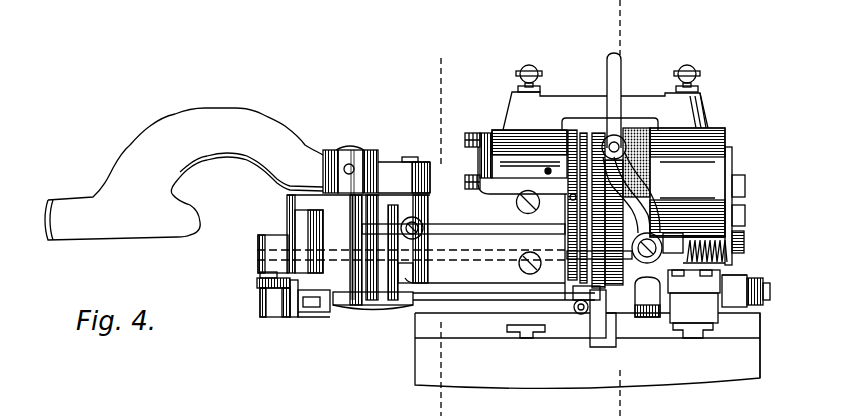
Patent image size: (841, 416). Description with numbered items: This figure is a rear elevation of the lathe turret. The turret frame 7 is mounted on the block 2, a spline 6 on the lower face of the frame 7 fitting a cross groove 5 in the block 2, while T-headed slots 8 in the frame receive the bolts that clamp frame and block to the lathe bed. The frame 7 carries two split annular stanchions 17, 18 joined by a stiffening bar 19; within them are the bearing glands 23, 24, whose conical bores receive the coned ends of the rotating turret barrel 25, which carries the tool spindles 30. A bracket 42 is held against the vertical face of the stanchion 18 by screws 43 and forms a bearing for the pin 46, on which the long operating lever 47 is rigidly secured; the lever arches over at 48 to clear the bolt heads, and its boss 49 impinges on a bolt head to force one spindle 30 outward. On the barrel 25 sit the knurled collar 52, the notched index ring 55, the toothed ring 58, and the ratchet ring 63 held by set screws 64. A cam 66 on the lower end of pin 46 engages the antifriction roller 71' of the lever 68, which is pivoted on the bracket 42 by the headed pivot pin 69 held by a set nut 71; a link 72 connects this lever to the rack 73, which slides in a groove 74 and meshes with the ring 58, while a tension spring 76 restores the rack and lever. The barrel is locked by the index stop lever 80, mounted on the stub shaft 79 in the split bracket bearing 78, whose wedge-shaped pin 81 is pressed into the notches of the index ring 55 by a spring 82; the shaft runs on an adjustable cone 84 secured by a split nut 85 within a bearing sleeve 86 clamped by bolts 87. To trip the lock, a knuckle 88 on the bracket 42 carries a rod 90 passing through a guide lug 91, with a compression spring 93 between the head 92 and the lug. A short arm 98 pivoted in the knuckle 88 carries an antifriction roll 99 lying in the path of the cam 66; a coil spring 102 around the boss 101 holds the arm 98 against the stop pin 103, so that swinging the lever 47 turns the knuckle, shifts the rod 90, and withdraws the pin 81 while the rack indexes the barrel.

The block 2 is at (587, 350).
The cross groove 5 is at (608, 348).
The spline 6 is at (596, 362).
The turret frame 7 is at (761, 327).
The T-headed slots 8 is at (507, 325).
The annular stanchion 17 is at (687, 180).
The annular stanchion 18 is at (502, 130).
The stiffening bar 19 is at (605, 97).
The bearing gland 23 is at (733, 150).
The bearing gland 24 is at (480, 158).
The turret barrel 25 is at (734, 167).
The spindles 30 is at (746, 190).
The bracket 42 is at (412, 223).
The screws 43 is at (536, 208).
The pin 46 is at (354, 150).
The lever 47 is at (184, 174).
The arch 48 is at (216, 163).
The boss or projection 49 is at (198, 212).
The knurled collar 52 is at (656, 126).
The notched index ring 55 is at (610, 196).
The ring 58 is at (585, 206).
The ratchet ring 63 is at (555, 176).
The set screws 64 is at (570, 195).
The cam 66 is at (358, 310).
The lever 68 is at (443, 289).
The headed pivot pin 69 is at (414, 157).
The set nut 71 is at (463, 223).
The antifriction roller 71' is at (391, 271).
The link 72 is at (574, 297).
The rack 73 is at (612, 308).
The groove 74 is at (590, 318).
The tension spring 76 is at (576, 310).
The split bracket bearing 78 is at (694, 308).
The stub bearing shaft 79 is at (770, 290).
The index stop lever 80 is at (621, 77).
The wedge shaped pin 81 is at (622, 137).
The spring 82 is at (647, 297).
The adjustable cone 84 is at (760, 276).
The split nut 85 is at (770, 298).
The bearing sleeve 86 is at (748, 272).
The bolts 87 is at (688, 278).
The knuckle 88 is at (258, 250).
The rod 90 is at (568, 243).
The guide lug 91 is at (657, 248).
The head 92 is at (730, 257).
The compression spring 93 is at (745, 248).
The arm or lever 98 is at (260, 308).
The antifriction roll 99 is at (326, 317).
The boss 101 is at (259, 275).
The coil spring 102 is at (257, 284).
The stop pin 103 is at (312, 312).